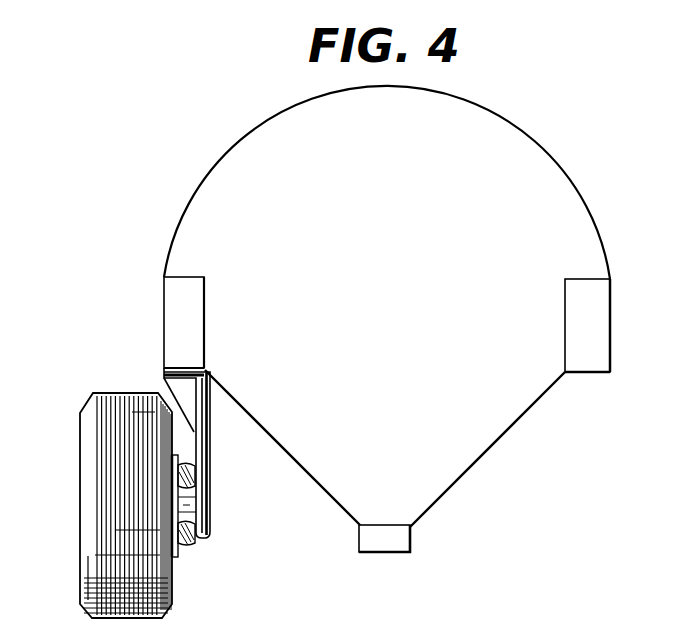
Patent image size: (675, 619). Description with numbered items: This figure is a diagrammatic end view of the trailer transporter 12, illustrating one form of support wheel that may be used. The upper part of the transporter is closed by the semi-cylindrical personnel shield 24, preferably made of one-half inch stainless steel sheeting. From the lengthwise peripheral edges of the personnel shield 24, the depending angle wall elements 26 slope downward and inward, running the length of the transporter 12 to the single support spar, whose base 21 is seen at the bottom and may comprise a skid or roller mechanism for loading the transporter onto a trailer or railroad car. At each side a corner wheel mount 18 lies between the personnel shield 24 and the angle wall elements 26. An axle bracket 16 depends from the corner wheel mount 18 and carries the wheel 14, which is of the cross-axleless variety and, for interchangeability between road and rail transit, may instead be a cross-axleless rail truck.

The trailer transporter 12 is at (383, 322).
The wheel 14 is at (81, 604).
The axle bracket 16 is at (207, 455).
The corner wheel mount 18 is at (163, 310).
The base of spar 21 is at (412, 538).
The personnel shield 24 is at (480, 110).
The angle wall element 26 is at (308, 474).